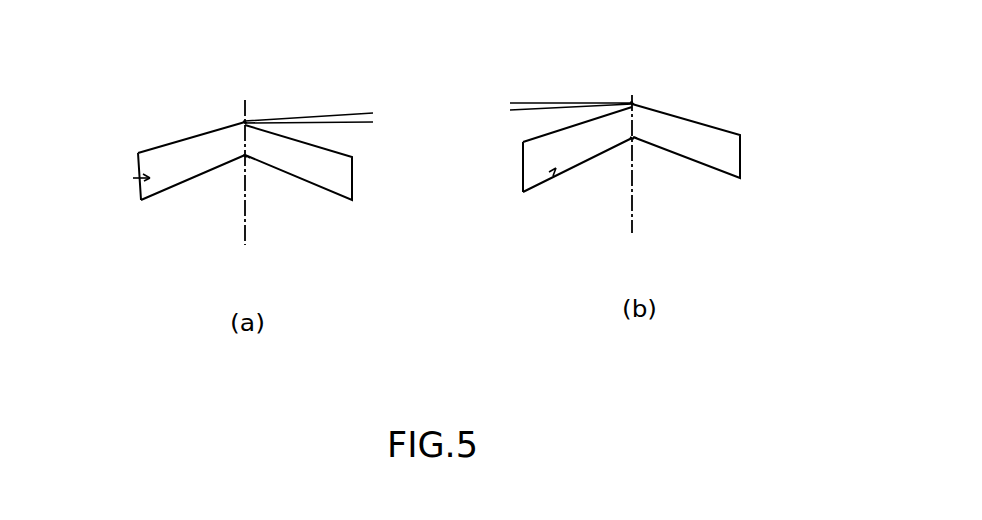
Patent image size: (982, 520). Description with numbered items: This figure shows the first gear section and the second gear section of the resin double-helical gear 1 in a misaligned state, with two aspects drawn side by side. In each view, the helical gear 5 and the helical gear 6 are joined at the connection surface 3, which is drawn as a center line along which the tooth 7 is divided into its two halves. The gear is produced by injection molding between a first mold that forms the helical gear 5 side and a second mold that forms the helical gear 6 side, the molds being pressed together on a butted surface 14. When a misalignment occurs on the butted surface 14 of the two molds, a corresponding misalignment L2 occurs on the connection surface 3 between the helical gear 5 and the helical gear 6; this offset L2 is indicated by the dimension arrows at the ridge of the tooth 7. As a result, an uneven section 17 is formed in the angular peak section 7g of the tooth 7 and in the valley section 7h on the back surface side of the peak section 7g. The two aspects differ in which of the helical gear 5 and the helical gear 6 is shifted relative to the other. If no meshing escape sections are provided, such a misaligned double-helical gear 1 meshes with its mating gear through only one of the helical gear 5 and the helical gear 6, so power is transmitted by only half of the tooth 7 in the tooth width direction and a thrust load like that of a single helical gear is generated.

The resin double-helical gear 1 is at (127, 128).
The connection surface 3 is at (245, 205).
The helical gear 5 is at (169, 152).
The helical gear 6 is at (330, 158).
The tooth 7 is at (140, 180).
The peak section 7g is at (244, 120).
The valley section 7h is at (247, 157).
The butted surface 14 is at (248, 158).
The uneven section 17 is at (248, 121).
The misalignment L2 is at (373, 88).